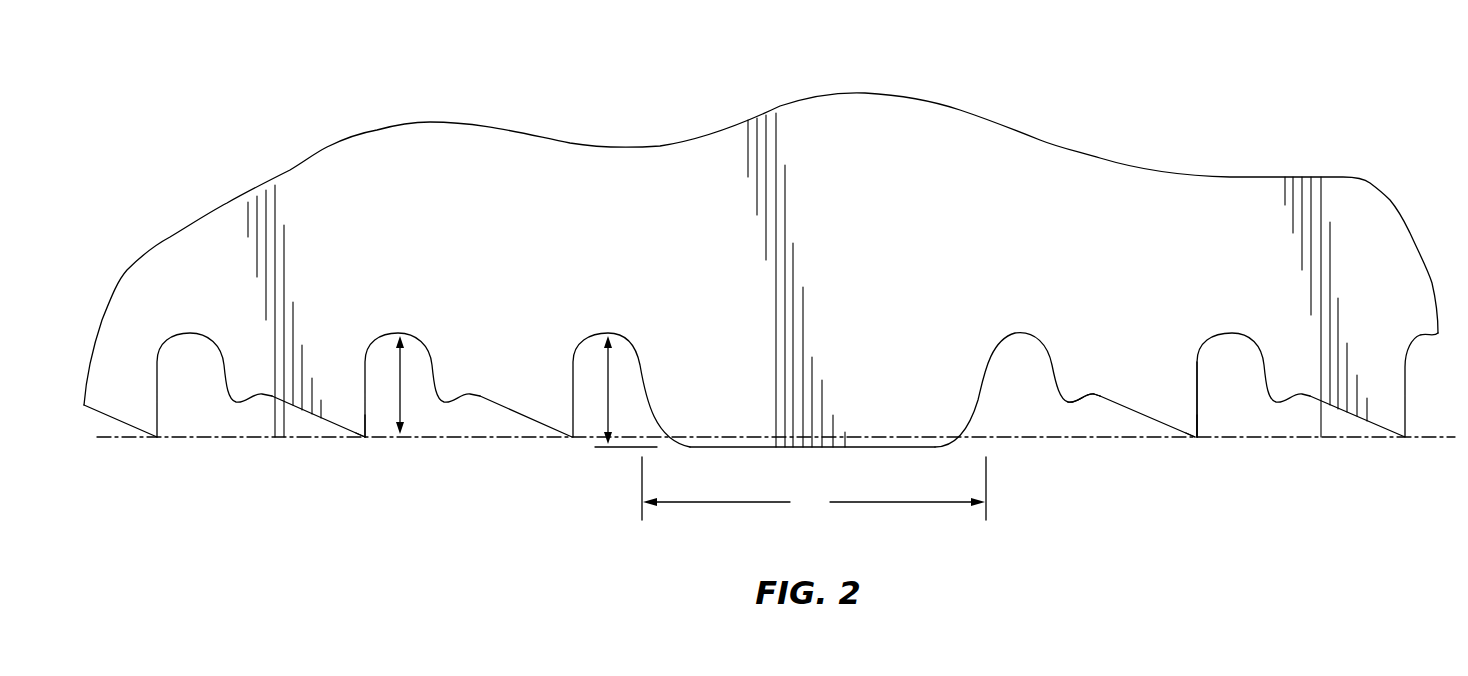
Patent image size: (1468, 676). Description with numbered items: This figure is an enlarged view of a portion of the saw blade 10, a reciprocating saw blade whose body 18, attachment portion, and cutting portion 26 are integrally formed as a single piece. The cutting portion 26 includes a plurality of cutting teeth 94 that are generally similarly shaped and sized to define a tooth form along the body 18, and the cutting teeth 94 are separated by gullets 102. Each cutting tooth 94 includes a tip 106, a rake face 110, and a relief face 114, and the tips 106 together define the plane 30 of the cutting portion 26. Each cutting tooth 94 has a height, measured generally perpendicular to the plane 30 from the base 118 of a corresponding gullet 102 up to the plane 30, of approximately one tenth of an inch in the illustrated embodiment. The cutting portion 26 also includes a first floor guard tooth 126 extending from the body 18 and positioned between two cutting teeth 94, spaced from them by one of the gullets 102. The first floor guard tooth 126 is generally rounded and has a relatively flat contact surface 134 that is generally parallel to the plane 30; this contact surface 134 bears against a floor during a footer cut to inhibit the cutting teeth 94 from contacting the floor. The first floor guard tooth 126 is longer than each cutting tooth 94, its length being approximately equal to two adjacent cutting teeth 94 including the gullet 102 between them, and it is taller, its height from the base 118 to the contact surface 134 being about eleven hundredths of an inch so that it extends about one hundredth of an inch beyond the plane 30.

The saw blade 10 is at (1093, 66).
The body 18 is at (865, 148).
The cutting portion 26 is at (210, 469).
The plane 30 is at (1357, 438).
The cutting teeth 94 is at (302, 392).
The gullets 102 is at (186, 386).
The tip 106 is at (368, 442).
The rake face 110 is at (1201, 398).
The relief face 114 is at (1100, 405).
The base 118 is at (412, 340).
The first floor guard tooth 126 is at (748, 410).
The contact surface 134 is at (873, 449).